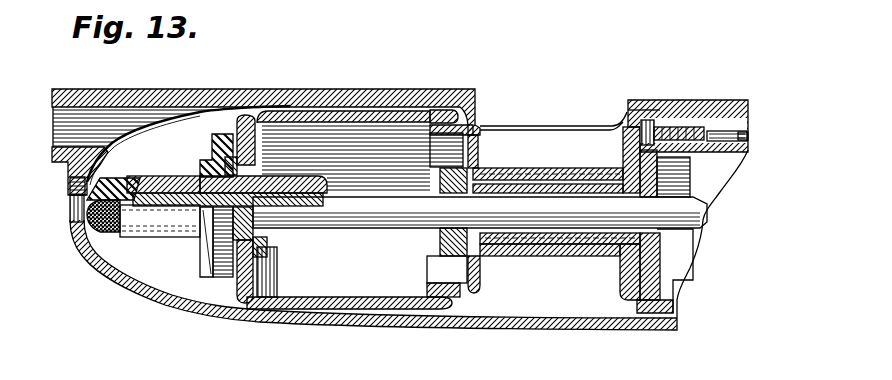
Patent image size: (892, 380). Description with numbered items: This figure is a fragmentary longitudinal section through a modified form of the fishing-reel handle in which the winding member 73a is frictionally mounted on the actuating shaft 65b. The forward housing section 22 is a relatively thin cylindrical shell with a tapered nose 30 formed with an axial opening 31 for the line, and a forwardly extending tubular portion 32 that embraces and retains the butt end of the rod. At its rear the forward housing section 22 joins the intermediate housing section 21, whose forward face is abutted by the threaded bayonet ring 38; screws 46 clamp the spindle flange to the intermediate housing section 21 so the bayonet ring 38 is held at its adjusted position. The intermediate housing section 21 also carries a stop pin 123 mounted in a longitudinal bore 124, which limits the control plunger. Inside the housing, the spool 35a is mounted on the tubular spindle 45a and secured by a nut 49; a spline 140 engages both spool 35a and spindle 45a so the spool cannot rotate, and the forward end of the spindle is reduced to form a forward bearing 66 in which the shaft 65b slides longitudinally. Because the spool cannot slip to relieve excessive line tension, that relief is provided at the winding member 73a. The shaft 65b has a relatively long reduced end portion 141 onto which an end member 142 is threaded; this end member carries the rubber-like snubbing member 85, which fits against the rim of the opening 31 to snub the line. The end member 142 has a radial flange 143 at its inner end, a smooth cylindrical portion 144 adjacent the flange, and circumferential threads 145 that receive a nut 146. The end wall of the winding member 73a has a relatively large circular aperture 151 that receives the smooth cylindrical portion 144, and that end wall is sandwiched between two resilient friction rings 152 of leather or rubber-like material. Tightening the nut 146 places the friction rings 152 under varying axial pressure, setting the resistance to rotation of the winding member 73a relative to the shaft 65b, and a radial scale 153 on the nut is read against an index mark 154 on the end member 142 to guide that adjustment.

The forwardly extending tubular portion 32 is at (63, 92).
The axial opening 31 is at (69, 222).
The tapered nose 30 is at (93, 260).
The forward housing section 22 is at (371, 323).
The winding member 73a is at (311, 311).
The resilient friction rings 152 is at (235, 143).
The circumferential threads 145 is at (198, 165).
The end member 142 is at (145, 175).
The circular aperture 151 is at (268, 180).
The reduced end portion 141 is at (177, 178).
The snubbing member 85 is at (106, 177).
The shaft 65b is at (381, 226).
The index mark 154 is at (177, 237).
The radial scale 153 is at (207, 247).
The nut 146 is at (211, 270).
The smooth cylindrical portion 144 is at (262, 241).
The radial flange 143 is at (270, 262).
The nut 49 is at (450, 250).
The spline 140 is at (547, 180).
The forward bearing 66 is at (488, 258).
The tubular spindle 45a is at (526, 258).
The spool 35a is at (576, 258).
The intermediate housing section 21 is at (729, 102).
The bayonet ring 38 is at (668, 118).
The screws 46 is at (693, 127).
The stop pin 123 is at (745, 139).
The longitudinal bore 124 is at (747, 132).